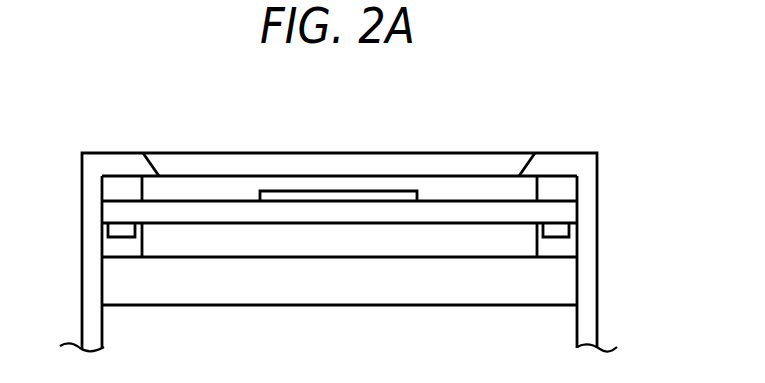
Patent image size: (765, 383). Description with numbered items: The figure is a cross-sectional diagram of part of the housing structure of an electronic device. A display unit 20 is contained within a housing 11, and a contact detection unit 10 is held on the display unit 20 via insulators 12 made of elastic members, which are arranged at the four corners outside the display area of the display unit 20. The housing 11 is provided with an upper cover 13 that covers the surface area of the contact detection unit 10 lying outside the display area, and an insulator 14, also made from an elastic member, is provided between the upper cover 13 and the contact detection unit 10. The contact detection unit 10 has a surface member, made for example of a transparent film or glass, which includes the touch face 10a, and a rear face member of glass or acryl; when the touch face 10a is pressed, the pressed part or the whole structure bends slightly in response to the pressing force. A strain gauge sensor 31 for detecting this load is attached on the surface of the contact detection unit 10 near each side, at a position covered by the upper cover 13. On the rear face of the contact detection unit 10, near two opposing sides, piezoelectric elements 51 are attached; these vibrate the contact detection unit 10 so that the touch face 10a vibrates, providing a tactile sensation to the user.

The contact detection unit 10 is at (177, 216).
The touch face 10a is at (228, 201).
The housing 11 is at (587, 288).
The insulator 12 is at (110, 247).
The upper cover 13 is at (547, 167).
The insulator 14 is at (567, 188).
The display unit 20 is at (130, 280).
The strain gauge sensor 31 is at (365, 194).
The piezoelectric element 51 is at (117, 230).